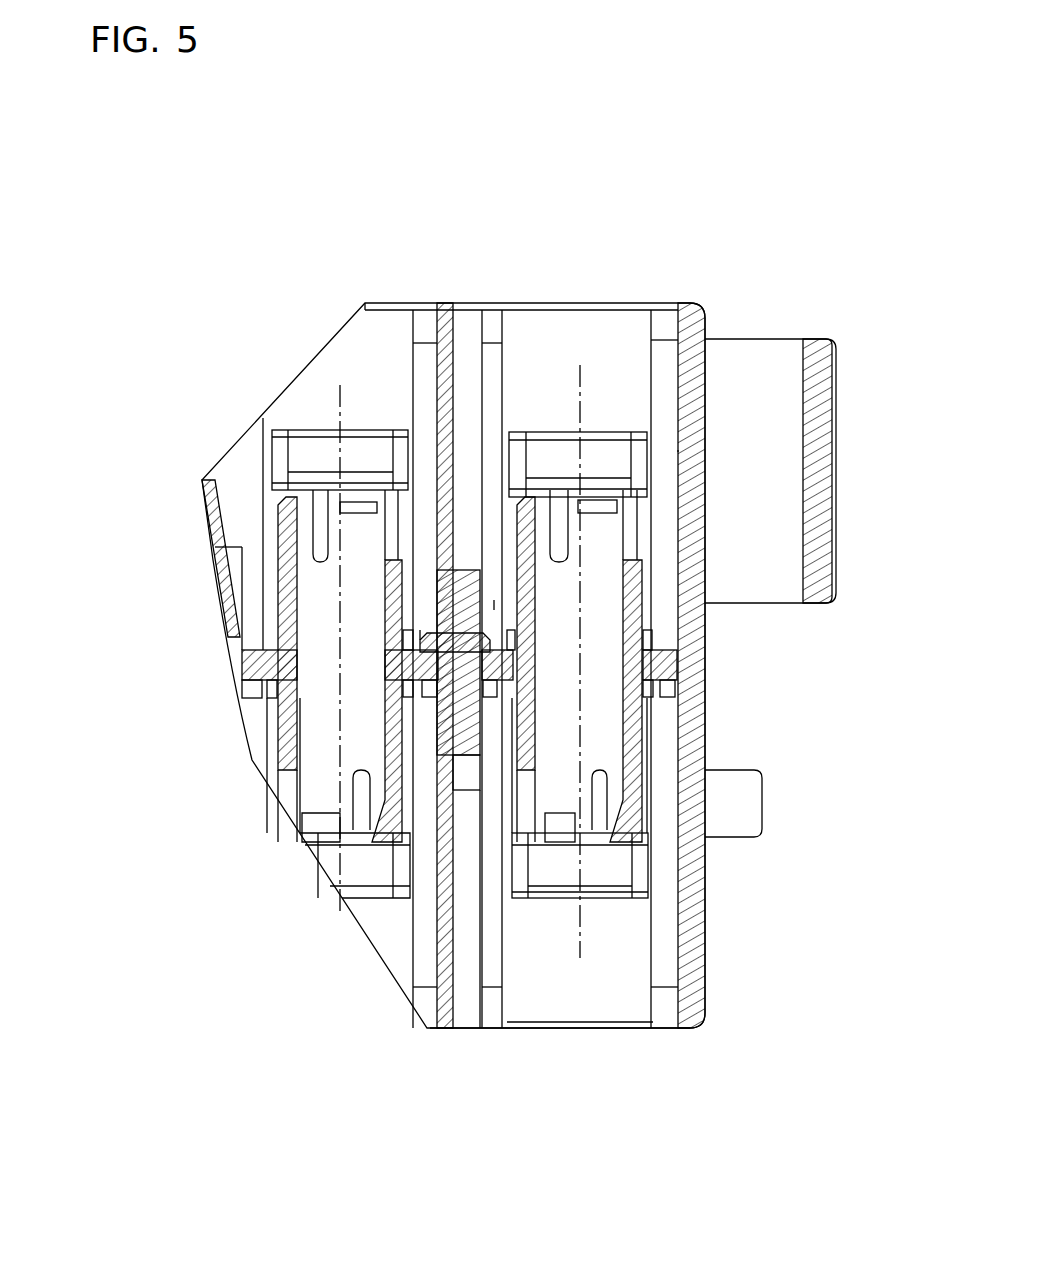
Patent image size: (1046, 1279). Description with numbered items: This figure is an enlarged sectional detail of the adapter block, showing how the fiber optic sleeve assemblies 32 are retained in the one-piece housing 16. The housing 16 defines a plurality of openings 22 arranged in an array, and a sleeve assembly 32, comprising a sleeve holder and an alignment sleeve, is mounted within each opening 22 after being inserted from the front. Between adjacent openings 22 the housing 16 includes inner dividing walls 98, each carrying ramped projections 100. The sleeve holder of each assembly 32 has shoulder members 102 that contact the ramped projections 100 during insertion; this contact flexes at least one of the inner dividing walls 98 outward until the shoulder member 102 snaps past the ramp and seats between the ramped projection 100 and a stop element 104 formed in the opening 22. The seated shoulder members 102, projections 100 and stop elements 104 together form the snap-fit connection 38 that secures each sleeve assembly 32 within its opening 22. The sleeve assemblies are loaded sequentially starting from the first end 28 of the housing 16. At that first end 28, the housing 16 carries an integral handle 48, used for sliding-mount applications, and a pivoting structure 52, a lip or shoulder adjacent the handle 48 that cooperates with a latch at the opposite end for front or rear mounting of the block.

The housing 16 is at (714, 968).
The openings 22 is at (621, 1034).
The first end 28 is at (708, 868).
The fiber optic sleeve assembly 32 is at (657, 553).
The snap-fit connection 38 is at (421, 635).
The handle 48 is at (822, 389).
The pivoting structure 52 is at (770, 796).
The inner dividing walls 98 is at (457, 736).
The ramped projections 100 is at (436, 640).
The shoulder members 102 is at (413, 657).
The stop element 104 is at (427, 690).